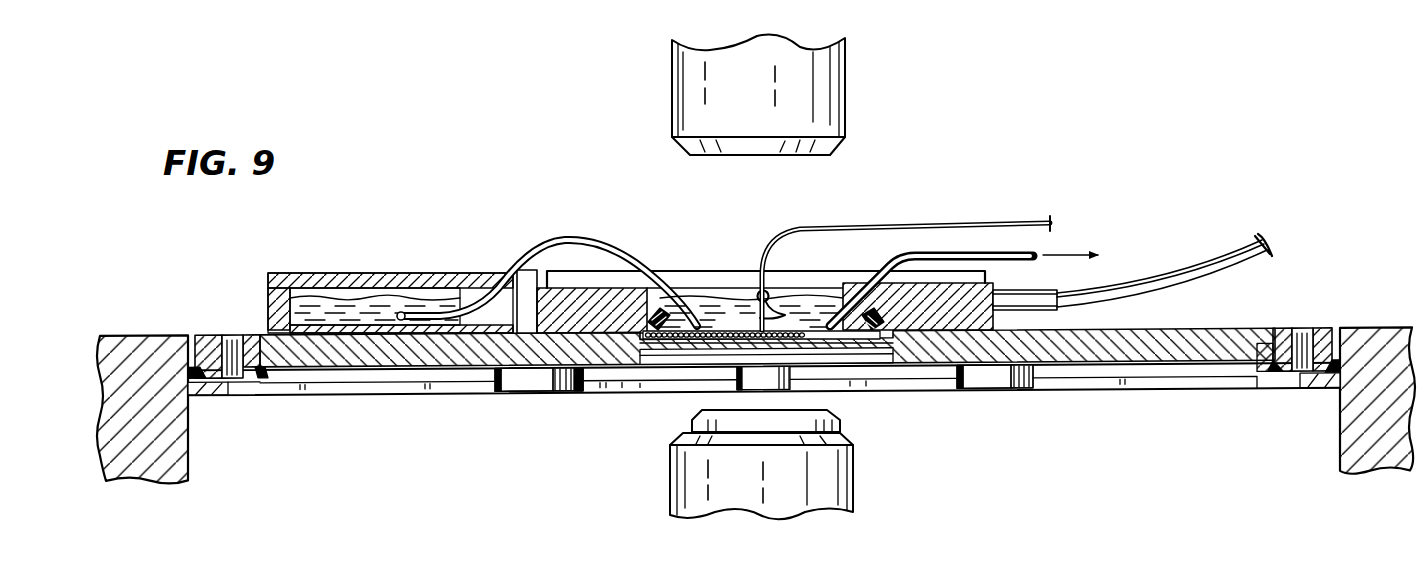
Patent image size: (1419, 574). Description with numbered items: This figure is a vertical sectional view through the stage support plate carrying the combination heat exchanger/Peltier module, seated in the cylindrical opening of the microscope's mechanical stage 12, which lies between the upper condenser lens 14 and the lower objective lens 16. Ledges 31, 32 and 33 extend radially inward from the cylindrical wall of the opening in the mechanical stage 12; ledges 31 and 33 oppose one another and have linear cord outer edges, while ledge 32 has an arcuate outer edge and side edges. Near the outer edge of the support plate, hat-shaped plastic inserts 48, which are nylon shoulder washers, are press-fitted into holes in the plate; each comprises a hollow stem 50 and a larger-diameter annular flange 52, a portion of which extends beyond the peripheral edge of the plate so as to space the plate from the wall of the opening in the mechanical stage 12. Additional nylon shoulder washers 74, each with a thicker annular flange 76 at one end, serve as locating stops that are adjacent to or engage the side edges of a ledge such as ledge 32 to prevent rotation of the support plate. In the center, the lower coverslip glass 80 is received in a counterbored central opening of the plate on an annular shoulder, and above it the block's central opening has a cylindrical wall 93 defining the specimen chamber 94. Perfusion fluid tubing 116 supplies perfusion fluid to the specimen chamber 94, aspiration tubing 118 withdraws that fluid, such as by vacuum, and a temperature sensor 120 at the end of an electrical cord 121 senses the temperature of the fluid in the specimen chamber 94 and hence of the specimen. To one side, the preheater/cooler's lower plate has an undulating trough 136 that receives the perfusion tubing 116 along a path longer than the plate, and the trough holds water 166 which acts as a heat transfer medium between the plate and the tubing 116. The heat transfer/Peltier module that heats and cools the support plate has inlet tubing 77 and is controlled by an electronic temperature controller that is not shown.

The mechanical stage 12 is at (150, 455).
The upper condenser lens 14 is at (797, 92).
The lower objective lens 16 is at (820, 490).
The ledge 31 is at (213, 397).
The ledge 32 is at (640, 390).
The ledge 33 is at (1318, 395).
The hat-shaped plastic insert 48 is at (235, 333).
The hollow stem 50 is at (225, 336).
The annular flange 52 is at (252, 395).
The nylon shoulder washer 74 is at (512, 398).
The thicker annular flange 76 is at (537, 385).
The inlet tubing 77 is at (1202, 257).
The lower coverslip glass 80 is at (717, 296).
The cylindrical wall 93 is at (812, 292).
The specimen chamber 94 is at (718, 290).
The perfusion fluid tubing 116 is at (548, 240).
The aspiration tubing 118 is at (1020, 242).
The temperature sensor 120 is at (803, 337).
The electrical cord 121 is at (857, 226).
The undulating trough 136 is at (300, 305).
The water 166 is at (363, 303).